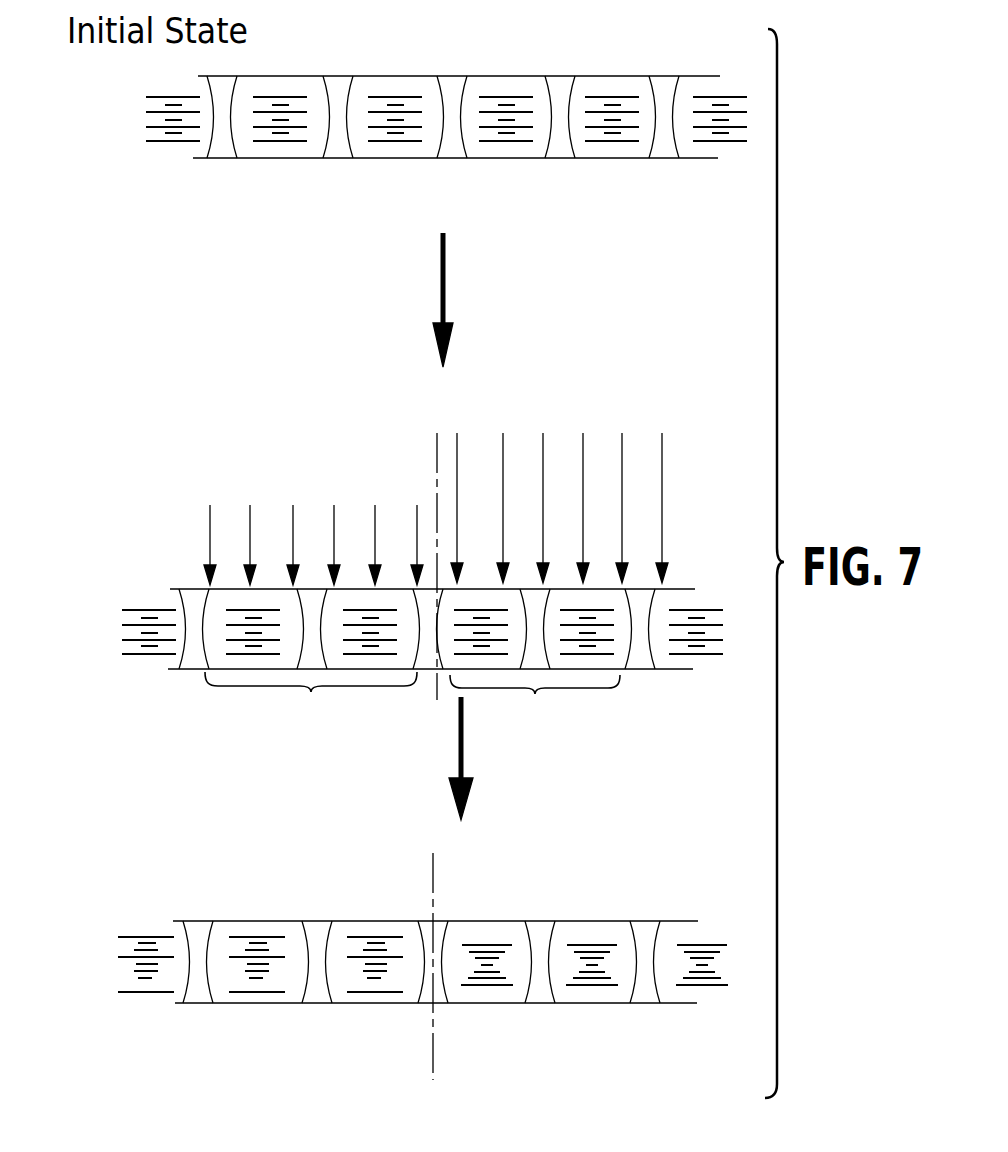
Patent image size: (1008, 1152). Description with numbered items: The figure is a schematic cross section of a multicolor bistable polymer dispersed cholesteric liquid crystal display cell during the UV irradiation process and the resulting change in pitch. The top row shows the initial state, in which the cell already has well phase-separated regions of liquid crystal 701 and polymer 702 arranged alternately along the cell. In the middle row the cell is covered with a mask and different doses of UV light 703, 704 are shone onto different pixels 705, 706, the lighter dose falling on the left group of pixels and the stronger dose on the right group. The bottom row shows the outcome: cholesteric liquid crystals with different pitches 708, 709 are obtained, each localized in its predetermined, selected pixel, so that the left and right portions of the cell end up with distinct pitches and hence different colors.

The liquid crystal region 701 is at (582, 154).
The polymer region 702 is at (337, 146).
The UV light dose 703 is at (313, 524).
The UV light dose 704 is at (559, 486).
The pixel 705 is at (324, 662).
The pixel 706 is at (535, 662).
The cholesteric liquid crystal pitch 708 is at (263, 983).
The cholesteric liquid crystal pitch 709 is at (498, 983).